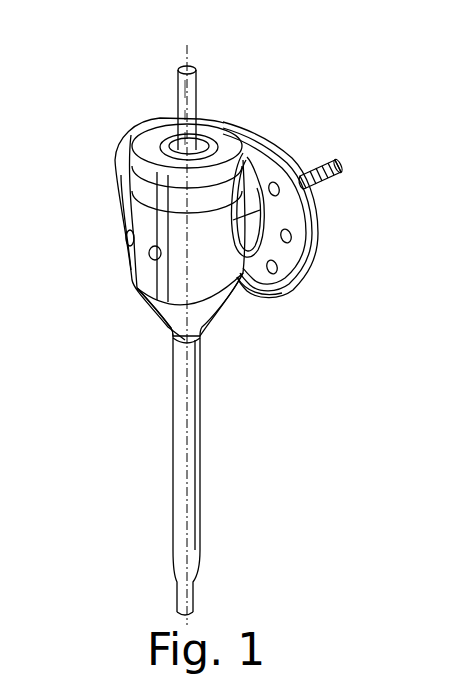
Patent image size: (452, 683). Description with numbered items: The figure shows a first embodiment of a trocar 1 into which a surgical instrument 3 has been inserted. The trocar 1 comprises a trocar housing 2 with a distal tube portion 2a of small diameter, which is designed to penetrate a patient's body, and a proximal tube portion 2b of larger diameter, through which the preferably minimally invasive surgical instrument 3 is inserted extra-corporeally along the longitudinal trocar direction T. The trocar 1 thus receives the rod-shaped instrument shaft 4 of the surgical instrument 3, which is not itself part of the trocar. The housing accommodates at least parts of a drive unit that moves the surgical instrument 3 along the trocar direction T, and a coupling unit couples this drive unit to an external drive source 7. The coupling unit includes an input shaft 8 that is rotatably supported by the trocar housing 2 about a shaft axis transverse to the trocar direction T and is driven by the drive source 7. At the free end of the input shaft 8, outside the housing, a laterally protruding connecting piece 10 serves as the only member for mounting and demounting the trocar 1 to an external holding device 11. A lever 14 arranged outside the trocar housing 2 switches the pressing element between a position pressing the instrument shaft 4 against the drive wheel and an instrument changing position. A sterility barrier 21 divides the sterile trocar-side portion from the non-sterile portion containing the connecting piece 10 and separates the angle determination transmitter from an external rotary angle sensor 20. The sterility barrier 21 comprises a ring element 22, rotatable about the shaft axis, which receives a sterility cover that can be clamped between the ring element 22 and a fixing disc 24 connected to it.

The trocar 1 is at (103, 134).
The longitudinal trocar direction T is at (188, 62).
The trocar housing 2 is at (159, 444).
The distal tube portion 2a is at (194, 446).
The proximal tube portion 2b is at (150, 292).
The surgical instrument 3 is at (200, 85).
The instrument shaft 4 is at (195, 117).
The external drive source 7 is at (366, 140).
The input shaft 8 is at (310, 170).
The connecting piece 10 is at (339, 173).
The external holding device 11 is at (366, 140).
The lever 14 is at (135, 205).
The external rotary angle sensor 20 is at (405, 92).
The sterility barrier 21 is at (282, 132).
The ring element 22 is at (310, 237).
The fixing disc 24 is at (290, 266).